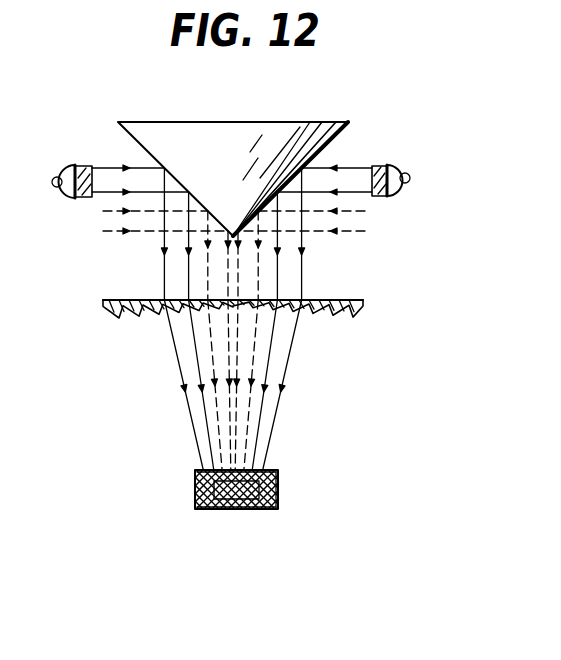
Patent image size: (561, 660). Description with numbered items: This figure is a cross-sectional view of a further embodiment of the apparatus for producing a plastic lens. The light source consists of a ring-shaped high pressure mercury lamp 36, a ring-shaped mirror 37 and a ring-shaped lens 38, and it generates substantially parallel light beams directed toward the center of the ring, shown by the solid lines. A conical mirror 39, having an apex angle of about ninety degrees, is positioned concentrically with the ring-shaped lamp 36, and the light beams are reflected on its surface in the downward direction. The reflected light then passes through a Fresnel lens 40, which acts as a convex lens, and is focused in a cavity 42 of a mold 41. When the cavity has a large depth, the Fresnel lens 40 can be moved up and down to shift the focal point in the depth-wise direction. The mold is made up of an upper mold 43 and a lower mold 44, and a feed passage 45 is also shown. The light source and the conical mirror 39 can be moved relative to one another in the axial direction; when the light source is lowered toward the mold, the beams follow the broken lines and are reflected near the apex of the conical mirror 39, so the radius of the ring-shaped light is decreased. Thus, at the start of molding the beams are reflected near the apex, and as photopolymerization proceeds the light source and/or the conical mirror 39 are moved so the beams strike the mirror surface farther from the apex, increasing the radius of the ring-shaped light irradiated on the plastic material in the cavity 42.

The ring-shaped high pressure mercury lamp 36 is at (418, 181).
The ring-shaped mirror 37 is at (405, 166).
The ring-shaped lens 38 is at (387, 197).
The conical mirror 39 is at (199, 131).
The Fresnel lens 40 is at (365, 302).
The mold 41 is at (279, 488).
The cavity 42 is at (210, 509).
The upper mold 43 is at (277, 468).
The lower mold 44 is at (279, 500).
The feed passage 45 is at (195, 487).